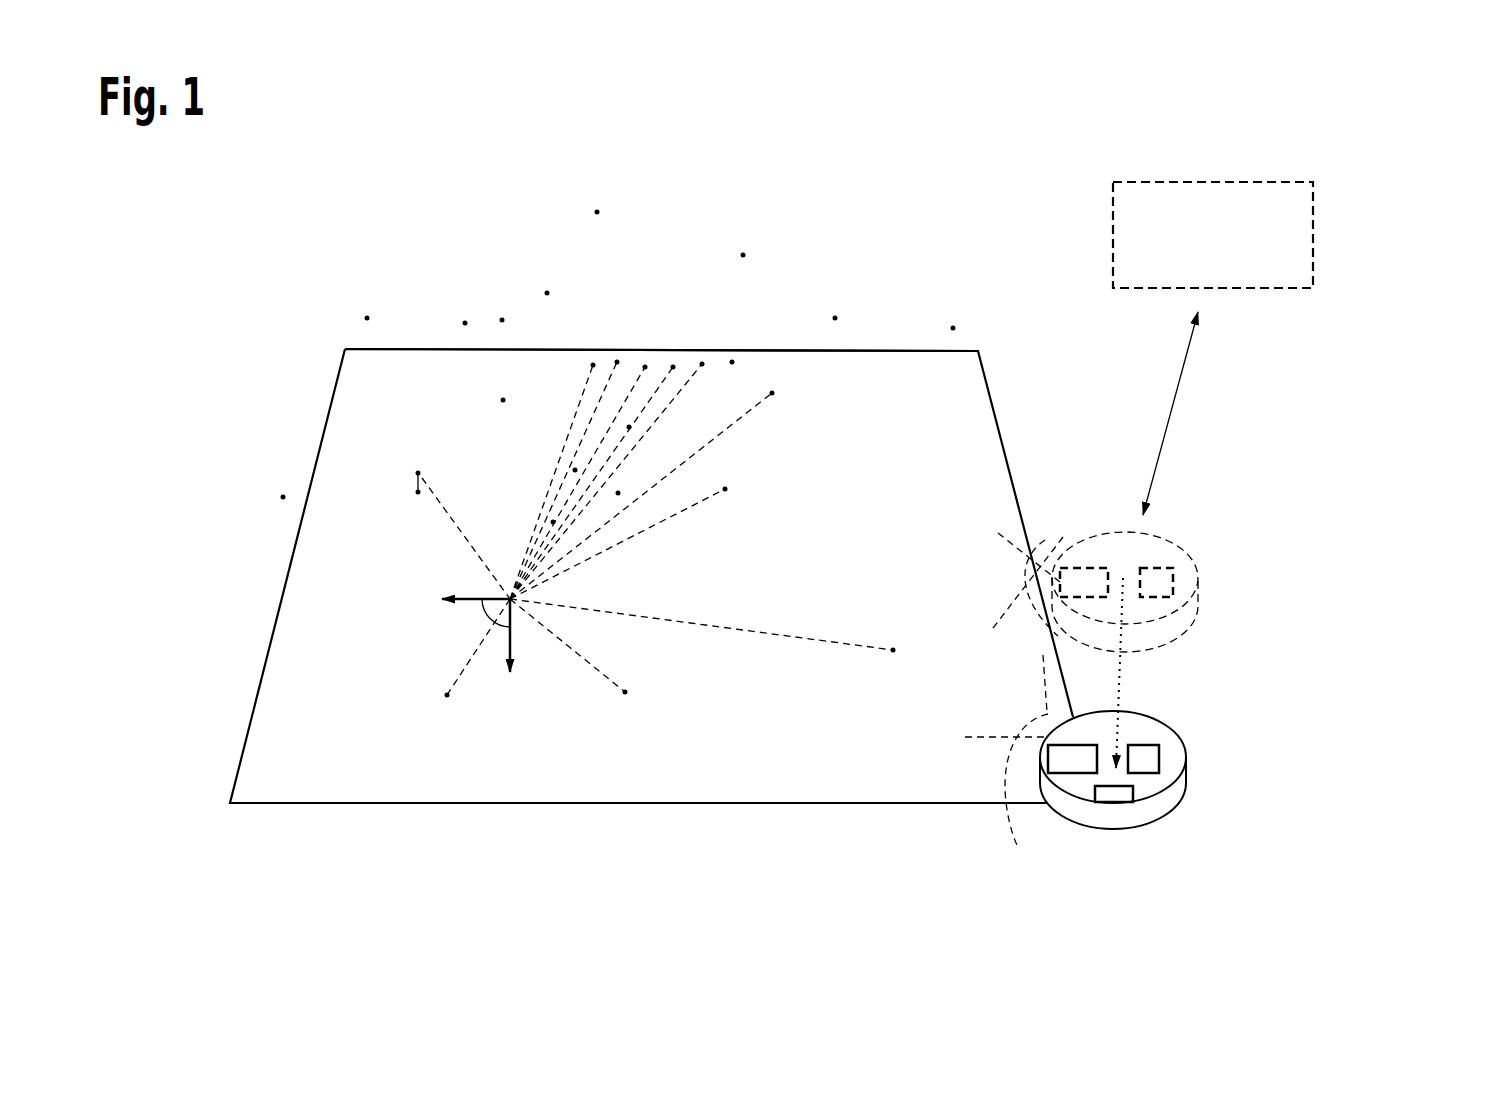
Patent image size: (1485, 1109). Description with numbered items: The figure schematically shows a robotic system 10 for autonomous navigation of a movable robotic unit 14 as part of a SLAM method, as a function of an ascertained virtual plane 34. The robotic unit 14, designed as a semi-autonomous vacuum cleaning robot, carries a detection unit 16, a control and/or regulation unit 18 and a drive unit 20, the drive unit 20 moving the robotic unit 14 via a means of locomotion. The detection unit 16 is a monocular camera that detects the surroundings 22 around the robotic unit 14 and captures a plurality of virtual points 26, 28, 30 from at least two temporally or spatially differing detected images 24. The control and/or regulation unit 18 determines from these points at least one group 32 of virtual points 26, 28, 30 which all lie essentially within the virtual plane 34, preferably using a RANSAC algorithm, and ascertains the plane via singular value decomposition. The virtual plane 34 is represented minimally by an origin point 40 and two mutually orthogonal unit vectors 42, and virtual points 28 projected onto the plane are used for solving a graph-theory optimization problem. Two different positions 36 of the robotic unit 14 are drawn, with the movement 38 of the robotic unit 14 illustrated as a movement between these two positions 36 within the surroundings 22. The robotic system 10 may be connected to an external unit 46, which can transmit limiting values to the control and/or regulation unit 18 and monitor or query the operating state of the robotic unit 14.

The robotic system 10 is at (1290, 380).
The movable robotic unit 14 is at (1178, 819).
The detection unit 16 is at (1070, 778).
The control and/or regulation unit 18 is at (1163, 753).
The drive unit 20 is at (1106, 806).
The surroundings 22 is at (916, 270).
The detected images 24 is at (1038, 560).
The virtual points 26 is at (743, 255).
The virtual points 28 is at (772, 393).
The virtual points 30 is at (418, 470).
The group of virtual points 32 is at (727, 346).
The virtual plane 34 is at (673, 806).
The position 36 is at (1202, 548).
The movement 38 is at (1130, 673).
The origin point 40 is at (512, 615).
The unit vectors 42 is at (500, 625).
The external unit 46 is at (1320, 214).